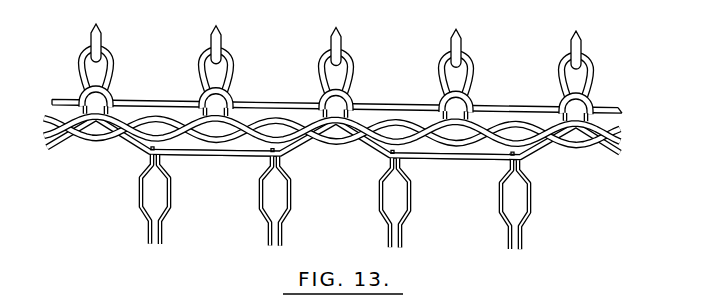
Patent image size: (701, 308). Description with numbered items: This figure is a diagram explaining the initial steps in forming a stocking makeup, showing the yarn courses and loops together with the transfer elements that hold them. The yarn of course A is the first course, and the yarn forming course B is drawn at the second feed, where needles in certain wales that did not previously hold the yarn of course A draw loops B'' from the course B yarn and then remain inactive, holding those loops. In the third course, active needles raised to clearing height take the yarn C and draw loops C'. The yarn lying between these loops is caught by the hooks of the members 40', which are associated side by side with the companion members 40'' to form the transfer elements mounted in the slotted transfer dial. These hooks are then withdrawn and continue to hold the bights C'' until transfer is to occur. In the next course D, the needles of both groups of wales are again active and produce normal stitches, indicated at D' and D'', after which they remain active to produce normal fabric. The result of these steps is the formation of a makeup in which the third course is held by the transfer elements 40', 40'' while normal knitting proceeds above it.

The first strand A is at (46, 116).
The second strand B is at (318, 130).
The third strand C is at (325, 139).
The rod D is at (332, 94).
The loop D' is at (110, 57).
The loop D'' is at (232, 59).
The ring C' is at (109, 95).
The ring B'' is at (231, 92).
The rail portion of strand C C'' is at (335, 164).
The hook left portion 40' is at (184, 200).
The hook right portion 40'' is at (243, 200).